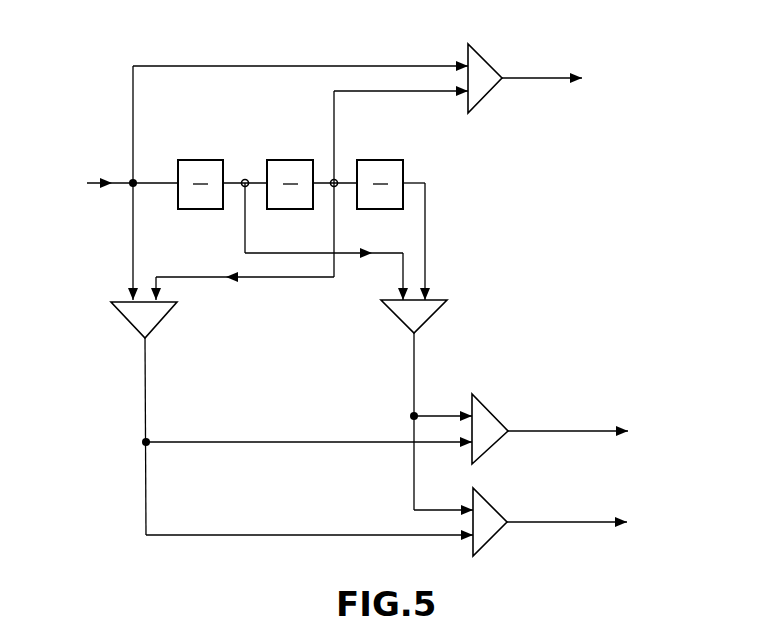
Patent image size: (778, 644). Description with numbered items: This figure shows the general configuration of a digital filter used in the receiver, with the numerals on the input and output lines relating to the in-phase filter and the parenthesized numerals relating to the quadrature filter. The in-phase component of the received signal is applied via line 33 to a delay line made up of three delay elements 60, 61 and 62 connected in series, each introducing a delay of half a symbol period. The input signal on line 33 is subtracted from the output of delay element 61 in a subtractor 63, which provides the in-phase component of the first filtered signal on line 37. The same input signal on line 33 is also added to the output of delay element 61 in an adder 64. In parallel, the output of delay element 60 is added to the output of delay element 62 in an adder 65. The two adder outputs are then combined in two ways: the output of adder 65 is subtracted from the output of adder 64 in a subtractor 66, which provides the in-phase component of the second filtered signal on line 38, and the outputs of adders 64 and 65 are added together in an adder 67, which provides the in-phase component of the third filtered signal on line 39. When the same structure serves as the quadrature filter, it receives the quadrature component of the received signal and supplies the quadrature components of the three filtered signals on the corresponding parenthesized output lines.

The input line 33 is at (99, 187).
The delay element 60 is at (189, 160).
The delay element 61 is at (277, 160).
The delay element 62 is at (367, 160).
The subtractor 63 is at (483, 56).
The adder 64 is at (165, 326).
The adder 65 is at (397, 323).
The subtractor 66 is at (491, 502).
The adder 67 is at (488, 404).
The output line 37 is at (518, 77).
The output line 38 is at (545, 520).
The output line 39 is at (545, 428).